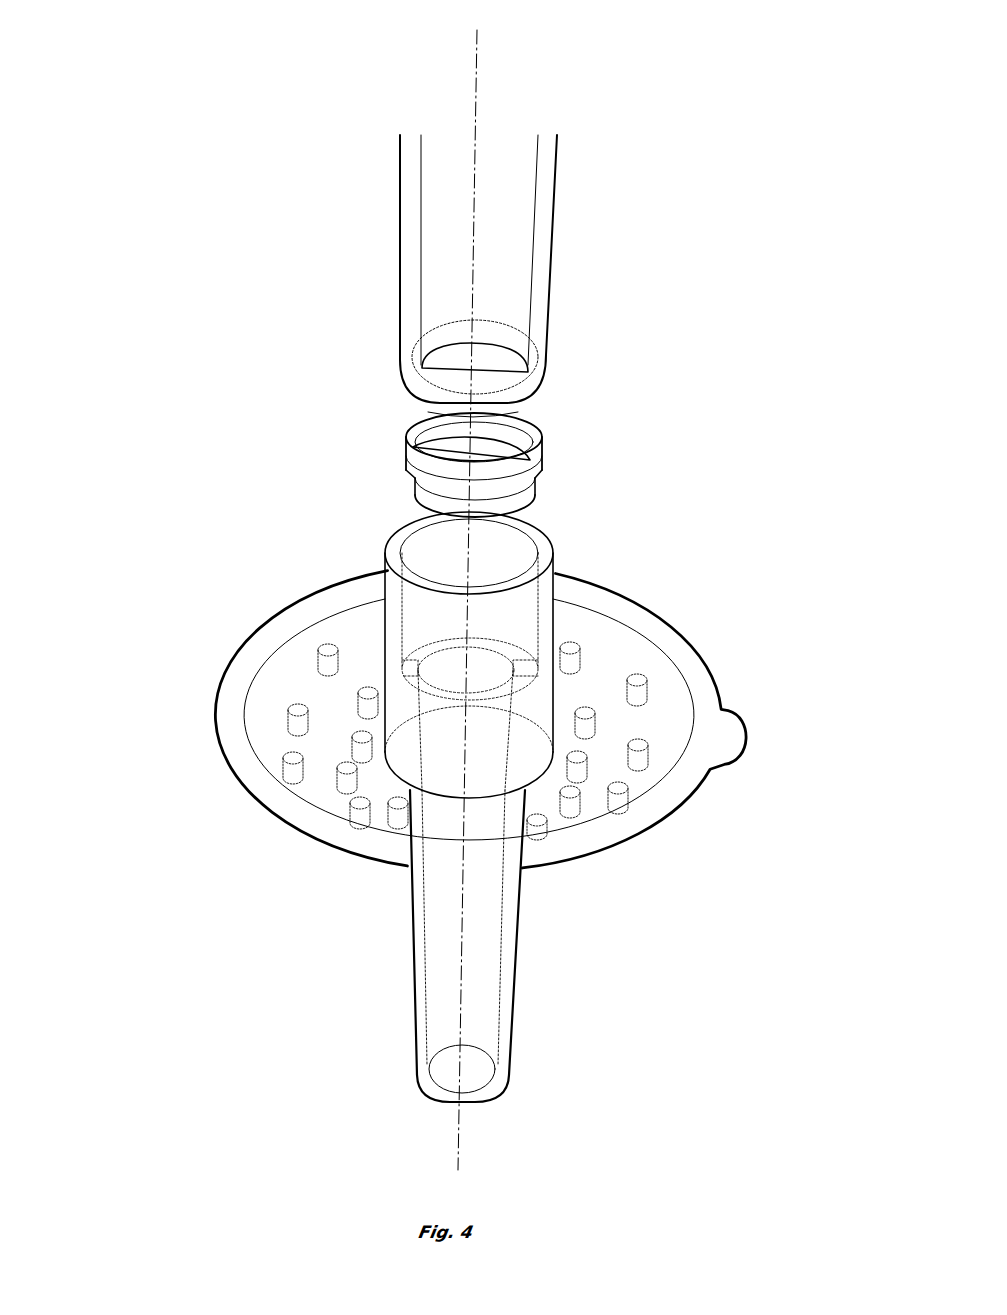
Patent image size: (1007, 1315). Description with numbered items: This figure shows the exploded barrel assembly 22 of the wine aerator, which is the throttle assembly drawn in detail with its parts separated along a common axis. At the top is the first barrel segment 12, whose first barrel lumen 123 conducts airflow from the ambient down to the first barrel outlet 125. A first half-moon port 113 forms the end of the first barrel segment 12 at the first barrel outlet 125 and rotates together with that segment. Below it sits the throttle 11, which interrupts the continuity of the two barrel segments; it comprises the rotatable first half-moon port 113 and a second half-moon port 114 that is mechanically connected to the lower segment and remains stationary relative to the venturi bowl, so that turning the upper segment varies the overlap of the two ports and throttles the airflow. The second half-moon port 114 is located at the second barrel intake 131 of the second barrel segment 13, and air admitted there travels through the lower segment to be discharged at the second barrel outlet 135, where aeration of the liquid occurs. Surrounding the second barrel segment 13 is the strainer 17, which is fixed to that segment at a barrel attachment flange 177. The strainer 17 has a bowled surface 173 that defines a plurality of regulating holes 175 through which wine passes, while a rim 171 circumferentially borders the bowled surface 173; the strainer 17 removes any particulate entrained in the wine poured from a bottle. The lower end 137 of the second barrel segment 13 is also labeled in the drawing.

The exploded barrel assembly 22 is at (138, 78).
The first barrel segment 12 is at (317, 276).
The first barrel lumen 123 is at (443, 177).
The first barrel outlet 125 is at (475, 348).
The first half-moon port 113 is at (403, 354).
The throttle 11 is at (378, 396).
The second half-moon port 114 is at (404, 439).
The strainer 17 is at (596, 465).
The rim 171 is at (688, 651).
The regulating holes 175 is at (588, 715).
The barrel attachment flange 177 is at (560, 746).
The bowled surface 173 is at (516, 720).
The second barrel segment 13 is at (345, 967).
The second barrel intake 131 is at (455, 805).
The second barrel outlet 135 is at (440, 918).
The closed bottom end 137 is at (445, 1072).